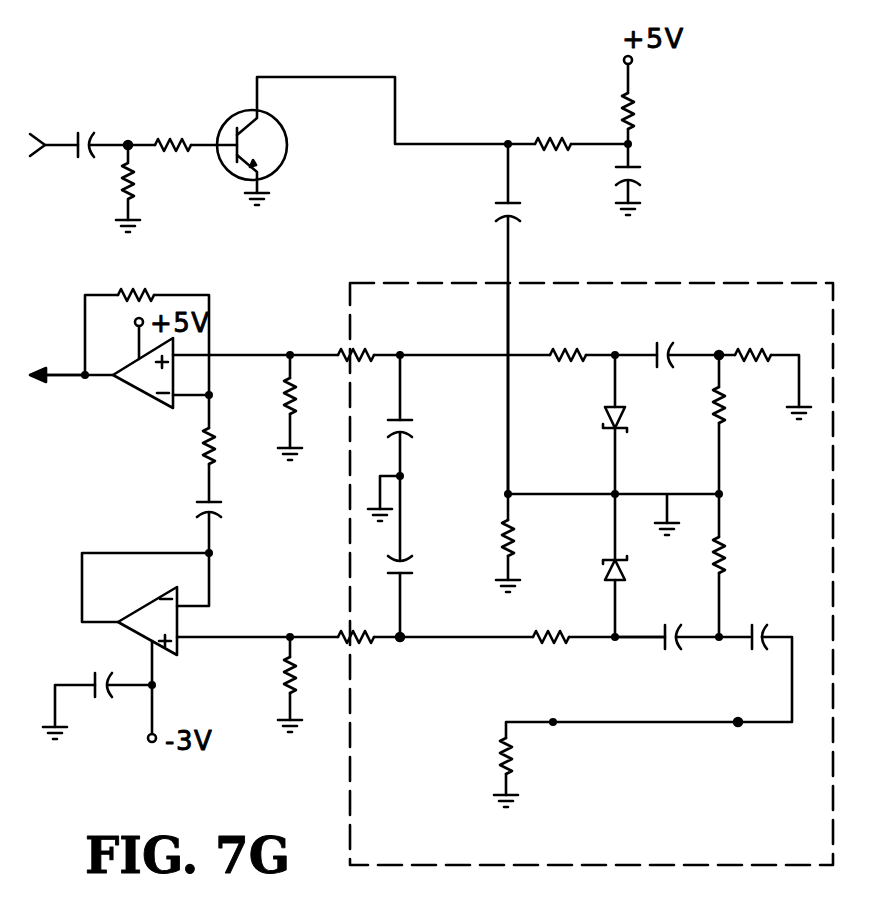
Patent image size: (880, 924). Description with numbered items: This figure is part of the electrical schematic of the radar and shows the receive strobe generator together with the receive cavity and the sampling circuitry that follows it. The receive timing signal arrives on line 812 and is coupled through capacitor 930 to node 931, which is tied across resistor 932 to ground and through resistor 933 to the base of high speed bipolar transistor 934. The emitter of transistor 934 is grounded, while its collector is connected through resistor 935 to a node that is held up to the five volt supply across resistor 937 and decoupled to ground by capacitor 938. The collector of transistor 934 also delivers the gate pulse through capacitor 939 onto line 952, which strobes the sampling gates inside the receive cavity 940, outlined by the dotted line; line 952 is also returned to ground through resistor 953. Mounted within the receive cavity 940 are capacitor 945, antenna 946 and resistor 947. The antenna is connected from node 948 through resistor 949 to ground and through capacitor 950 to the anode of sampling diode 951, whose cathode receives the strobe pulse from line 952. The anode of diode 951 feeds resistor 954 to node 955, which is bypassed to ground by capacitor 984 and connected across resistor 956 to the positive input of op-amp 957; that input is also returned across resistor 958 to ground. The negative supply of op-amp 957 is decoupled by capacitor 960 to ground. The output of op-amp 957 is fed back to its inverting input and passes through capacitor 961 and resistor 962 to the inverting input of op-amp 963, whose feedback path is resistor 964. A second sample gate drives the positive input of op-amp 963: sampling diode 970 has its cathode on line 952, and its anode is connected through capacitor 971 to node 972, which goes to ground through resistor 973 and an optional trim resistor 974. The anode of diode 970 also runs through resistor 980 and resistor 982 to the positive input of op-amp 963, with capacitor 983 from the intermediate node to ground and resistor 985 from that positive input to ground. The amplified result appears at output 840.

The line 812 is at (56, 143).
The output signal 840 is at (62, 385).
The capacitor 930 is at (82, 150).
The node 931 is at (128, 140).
The resistor 932 is at (130, 172).
The resistor 933 is at (172, 140).
The high speed bipolar transistor 934 is at (285, 162).
The resistor 935 is at (540, 138).
The resistor 937 is at (640, 112).
The capacitor 938 is at (640, 180).
The capacitor 939 is at (500, 205).
The receive cavity 940 is at (715, 786).
The capacitor 945 is at (765, 630).
The antenna 946 is at (628, 720).
The resistor 947 is at (505, 762).
The node 948 is at (722, 642).
The resistor 949 is at (730, 553).
The capacitor 950 is at (668, 628).
The sampling diode 951 is at (608, 578).
The line 952 is at (512, 326).
The resistor 953 is at (503, 540).
The resistor 954 is at (545, 650).
The node 955 is at (405, 645).
The resistor 956 is at (345, 632).
The op-amp 957 is at (178, 650).
The resistor 958 is at (292, 690).
The capacitor 960 is at (95, 700).
The capacitor 961 is at (197, 504).
The resistor 962 is at (212, 462).
The op-amp 963 is at (152, 412).
The resistor 964 is at (135, 285).
The sampling diode 970 is at (606, 412).
The capacitor 971 is at (662, 348).
The node 972 is at (722, 350).
The resistor 973 is at (710, 418).
The trim resistor 974 is at (758, 380).
The resistor 980 is at (560, 364).
The resistor 982 is at (362, 352).
The capacitor 983 is at (405, 425).
The capacitor 984 is at (412, 582).
The resistor 985 is at (285, 378).